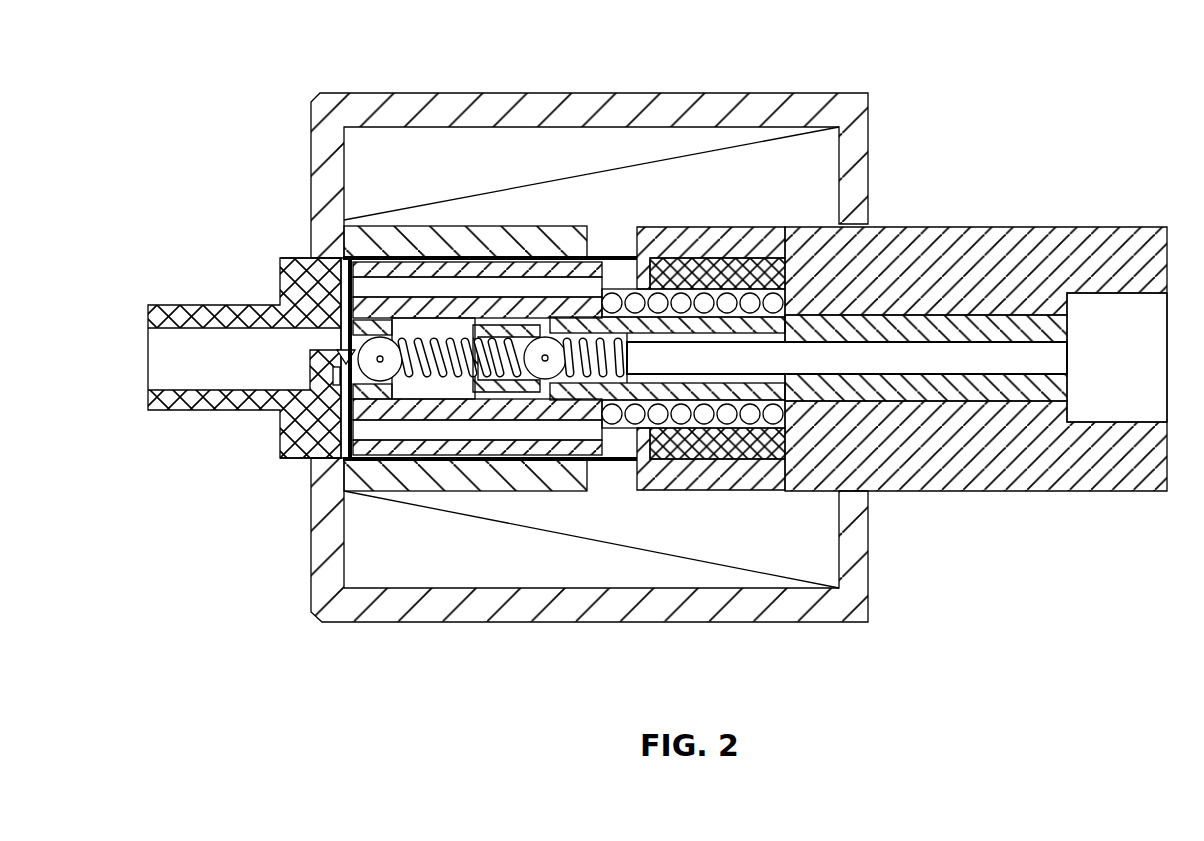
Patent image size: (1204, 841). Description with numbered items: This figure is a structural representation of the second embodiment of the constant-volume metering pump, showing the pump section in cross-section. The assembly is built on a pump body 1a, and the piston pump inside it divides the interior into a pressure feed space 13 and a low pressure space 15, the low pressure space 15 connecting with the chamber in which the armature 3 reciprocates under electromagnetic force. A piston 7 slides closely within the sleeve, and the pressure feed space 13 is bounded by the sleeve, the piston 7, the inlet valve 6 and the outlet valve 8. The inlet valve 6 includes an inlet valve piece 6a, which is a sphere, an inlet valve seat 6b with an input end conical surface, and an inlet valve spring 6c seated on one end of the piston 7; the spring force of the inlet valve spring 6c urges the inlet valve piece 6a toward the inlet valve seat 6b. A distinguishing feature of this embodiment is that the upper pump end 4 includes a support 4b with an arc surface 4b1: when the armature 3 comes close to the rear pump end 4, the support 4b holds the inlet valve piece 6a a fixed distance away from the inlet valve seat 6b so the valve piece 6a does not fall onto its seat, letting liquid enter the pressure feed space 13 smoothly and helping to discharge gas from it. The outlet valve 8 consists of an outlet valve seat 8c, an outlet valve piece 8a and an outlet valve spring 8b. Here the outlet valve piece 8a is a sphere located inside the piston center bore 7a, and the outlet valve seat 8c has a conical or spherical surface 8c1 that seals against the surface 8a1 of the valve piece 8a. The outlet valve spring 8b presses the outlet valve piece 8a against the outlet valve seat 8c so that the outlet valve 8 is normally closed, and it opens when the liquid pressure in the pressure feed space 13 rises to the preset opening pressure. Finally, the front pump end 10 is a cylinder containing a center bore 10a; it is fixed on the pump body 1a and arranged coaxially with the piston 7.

The pump body 1a is at (1070, 218).
The armature 3 is at (366, 312).
The upper pump end 4 is at (287, 290).
The support 4b is at (283, 428).
The arc surface 4b1 is at (333, 362).
The inlet valve 6 is at (390, 272).
The inlet valve piece 6a is at (368, 385).
The inlet valve seat 6b is at (355, 363).
The inlet valve spring 6c is at (473, 357).
The piston 7 is at (967, 388).
The piston center bore 7a is at (903, 357).
The outlet valve 8 is at (605, 398).
The outlet valve piece 8a is at (545, 358).
The surface of the valve piece 8a1 is at (520, 348).
The outlet valve spring 8b is at (606, 357).
The outlet valve seat 8c is at (522, 388).
The conical surface or spherical surface 8c1 is at (532, 380).
The front pump end 10 is at (698, 270).
The center bore 10a is at (762, 289).
The pressure feed space 13 is at (758, 363).
The low pressure space 15 is at (640, 447).